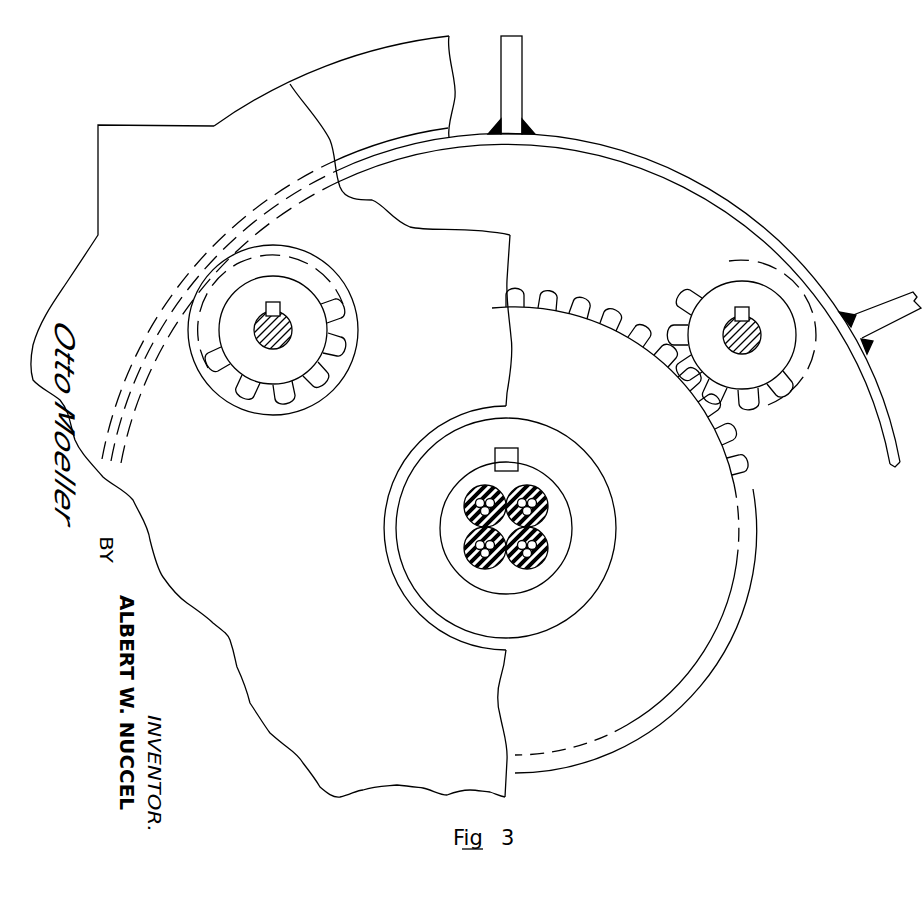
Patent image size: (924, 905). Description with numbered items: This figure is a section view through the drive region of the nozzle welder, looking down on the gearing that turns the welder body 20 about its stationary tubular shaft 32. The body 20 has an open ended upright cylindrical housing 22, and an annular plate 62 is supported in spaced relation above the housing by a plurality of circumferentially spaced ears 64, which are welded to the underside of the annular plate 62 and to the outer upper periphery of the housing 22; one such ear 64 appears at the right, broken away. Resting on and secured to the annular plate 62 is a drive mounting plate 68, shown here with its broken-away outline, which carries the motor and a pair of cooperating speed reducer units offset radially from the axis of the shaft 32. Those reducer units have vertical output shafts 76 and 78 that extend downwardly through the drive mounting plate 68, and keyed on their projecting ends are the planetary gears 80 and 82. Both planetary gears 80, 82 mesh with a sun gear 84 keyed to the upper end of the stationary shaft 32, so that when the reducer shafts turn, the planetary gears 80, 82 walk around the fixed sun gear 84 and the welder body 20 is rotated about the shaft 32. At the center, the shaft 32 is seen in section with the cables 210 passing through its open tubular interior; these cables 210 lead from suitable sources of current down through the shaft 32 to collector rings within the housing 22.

The body 20 is at (684, 174).
The upright cylindrical housing 22 is at (741, 209).
The shaft 32 is at (570, 505).
The annular plate 62 is at (352, 70).
The ears 64 is at (881, 306).
The drive mounting plate 68 is at (188, 140).
The output shaft 76 is at (285, 324).
The output shaft 78 is at (730, 320).
The planetary gear 80 is at (346, 312).
The planetary gear 82 is at (682, 315).
The sun gear 84 is at (584, 298).
The cables 210 is at (545, 532).